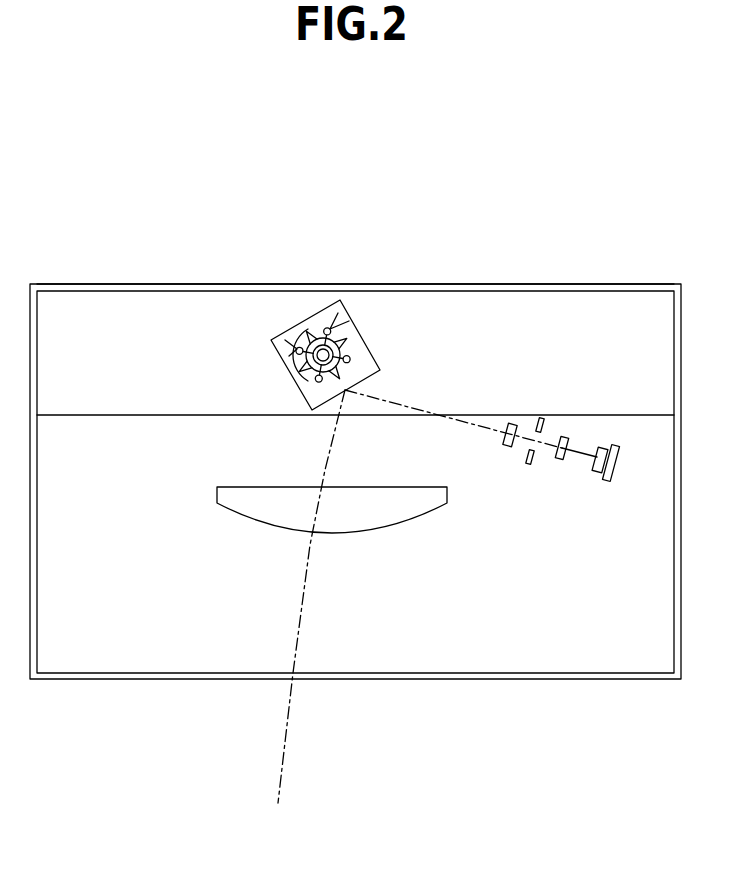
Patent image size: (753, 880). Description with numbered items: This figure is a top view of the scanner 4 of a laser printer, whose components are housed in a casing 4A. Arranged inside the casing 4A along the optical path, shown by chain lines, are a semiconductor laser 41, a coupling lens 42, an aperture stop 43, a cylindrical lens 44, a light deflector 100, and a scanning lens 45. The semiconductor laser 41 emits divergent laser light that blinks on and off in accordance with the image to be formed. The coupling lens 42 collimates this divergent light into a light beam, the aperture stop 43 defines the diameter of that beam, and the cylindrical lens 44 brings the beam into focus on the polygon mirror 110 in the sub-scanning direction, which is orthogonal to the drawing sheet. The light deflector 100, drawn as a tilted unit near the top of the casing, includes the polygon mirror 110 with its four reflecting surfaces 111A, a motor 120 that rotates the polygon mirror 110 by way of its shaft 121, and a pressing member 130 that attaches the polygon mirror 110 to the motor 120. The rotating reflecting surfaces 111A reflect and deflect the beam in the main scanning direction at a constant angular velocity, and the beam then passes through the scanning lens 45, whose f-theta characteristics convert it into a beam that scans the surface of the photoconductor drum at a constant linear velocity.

The scanner 4 is at (130, 252).
The casing 4A is at (240, 285).
The light deflector 100 is at (315, 303).
The polygon mirror 110 is at (300, 318).
The reflecting surfaces 111A is at (322, 317).
The motor 120 is at (300, 355).
The shaft 121 is at (290, 350).
The pressing member 130 is at (341, 315).
The semiconductor laser 41 is at (606, 442).
The coupling lens 42 is at (562, 437).
The aperture stop 43 is at (540, 418).
The cylindrical lens 44 is at (510, 424).
The scanning lens 45 is at (258, 487).